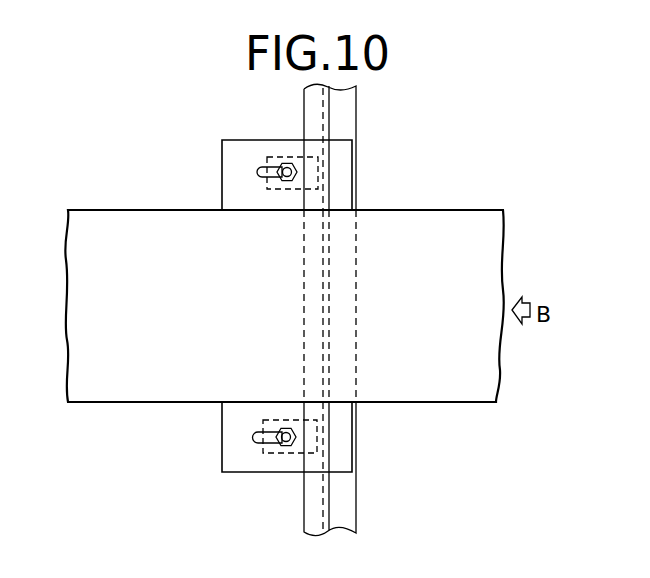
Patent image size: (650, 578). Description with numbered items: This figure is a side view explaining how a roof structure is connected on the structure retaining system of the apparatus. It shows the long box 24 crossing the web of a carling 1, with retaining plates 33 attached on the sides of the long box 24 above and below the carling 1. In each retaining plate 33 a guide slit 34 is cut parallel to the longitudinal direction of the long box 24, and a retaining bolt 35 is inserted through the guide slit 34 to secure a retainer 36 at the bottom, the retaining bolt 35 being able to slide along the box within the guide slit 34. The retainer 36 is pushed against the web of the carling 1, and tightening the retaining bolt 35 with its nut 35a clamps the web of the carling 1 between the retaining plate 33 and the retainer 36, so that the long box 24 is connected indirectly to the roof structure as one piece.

The carling 1 is at (348, 108).
The long box 24 is at (419, 218).
The retaining plate 33 is at (227, 163).
The guide slit 34 is at (258, 167).
The retaining bolt 35 is at (287, 162).
The nut 35a is at (286, 427).
The retainer 36 is at (277, 190).